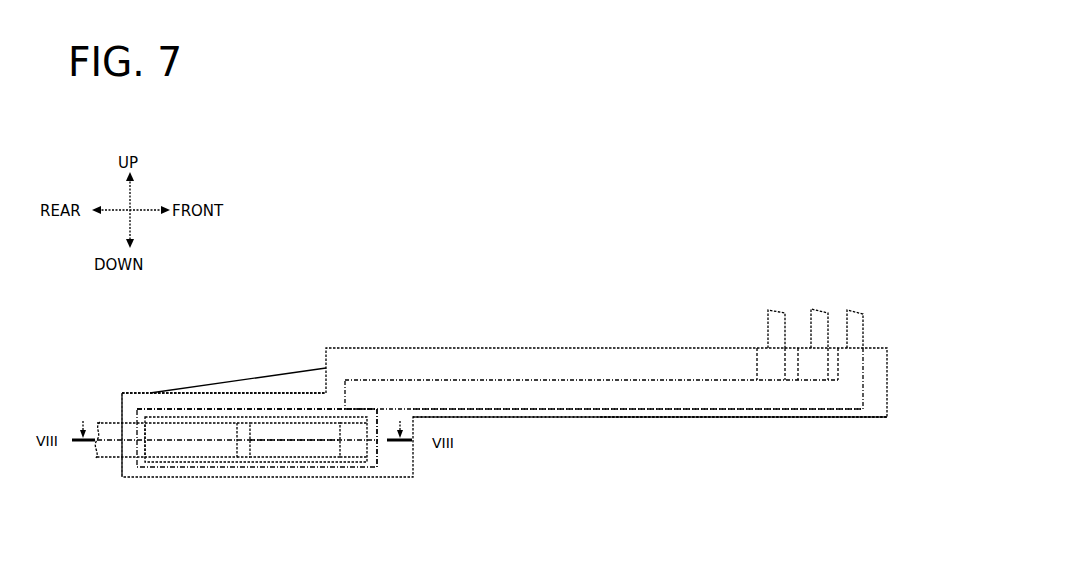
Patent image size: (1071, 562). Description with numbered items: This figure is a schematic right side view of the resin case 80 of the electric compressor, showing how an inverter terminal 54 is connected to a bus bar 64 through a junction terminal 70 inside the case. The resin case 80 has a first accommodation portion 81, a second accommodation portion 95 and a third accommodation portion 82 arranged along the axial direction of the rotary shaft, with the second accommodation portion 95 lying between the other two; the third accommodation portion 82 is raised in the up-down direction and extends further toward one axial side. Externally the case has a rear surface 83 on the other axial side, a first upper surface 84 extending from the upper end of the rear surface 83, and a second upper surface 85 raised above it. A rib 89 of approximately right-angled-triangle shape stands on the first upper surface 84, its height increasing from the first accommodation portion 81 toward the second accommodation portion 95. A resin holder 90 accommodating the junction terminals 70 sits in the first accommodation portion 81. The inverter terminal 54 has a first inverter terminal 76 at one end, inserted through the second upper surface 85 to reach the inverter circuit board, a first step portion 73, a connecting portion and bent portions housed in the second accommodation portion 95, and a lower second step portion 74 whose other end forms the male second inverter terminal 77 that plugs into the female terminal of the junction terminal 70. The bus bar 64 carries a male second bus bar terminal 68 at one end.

The resin case 80 is at (448, 330).
The second upper surface 85 is at (545, 347).
The first inverter terminal 76 is at (853, 318).
The rib 89 is at (263, 376).
The first upper surface 84 is at (222, 393).
The rear surface 83 is at (120, 405).
The holder 90 is at (168, 409).
The second step portion 74 is at (316, 471).
The second accommodation portion 95 is at (362, 471).
The first accommodation portion 81 is at (208, 470).
The bus bar 64 is at (108, 468).
The second bus bar terminal 68 is at (200, 452).
The junction terminal 70 is at (237, 467).
The second inverter terminal 77 is at (287, 453).
The inverter terminal 54 is at (502, 418).
The third accommodation portion 82 is at (573, 417).
The first step portion 73 is at (632, 417).